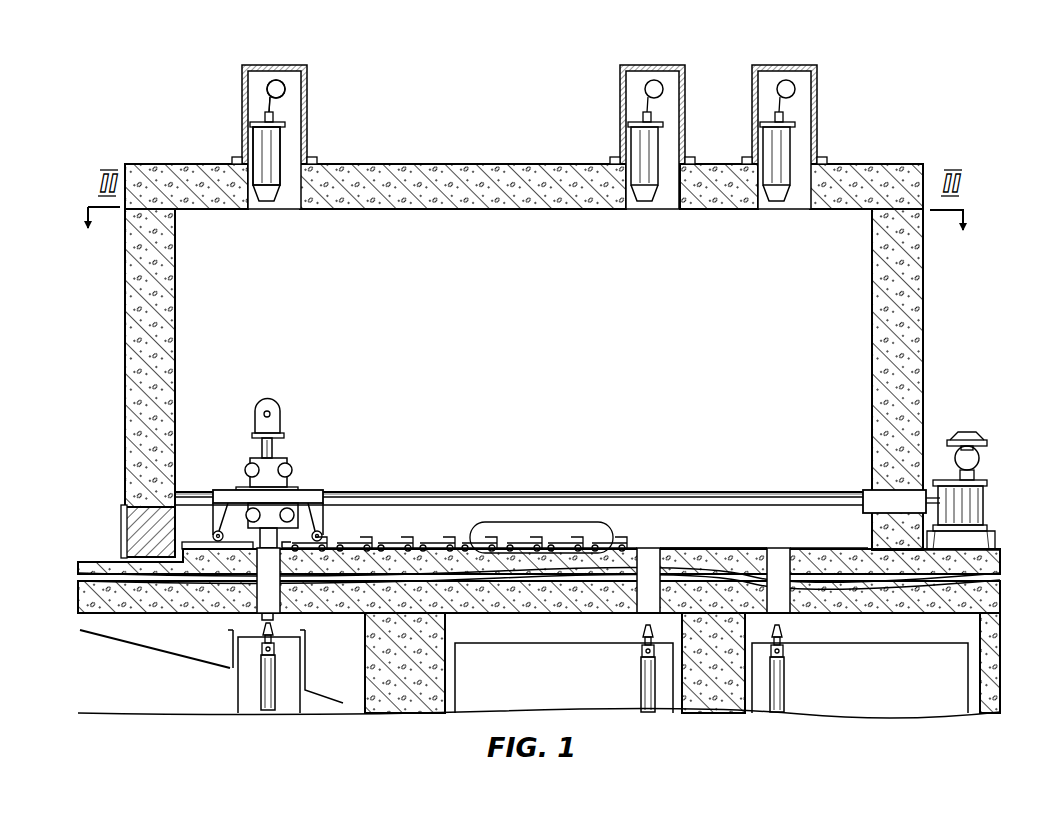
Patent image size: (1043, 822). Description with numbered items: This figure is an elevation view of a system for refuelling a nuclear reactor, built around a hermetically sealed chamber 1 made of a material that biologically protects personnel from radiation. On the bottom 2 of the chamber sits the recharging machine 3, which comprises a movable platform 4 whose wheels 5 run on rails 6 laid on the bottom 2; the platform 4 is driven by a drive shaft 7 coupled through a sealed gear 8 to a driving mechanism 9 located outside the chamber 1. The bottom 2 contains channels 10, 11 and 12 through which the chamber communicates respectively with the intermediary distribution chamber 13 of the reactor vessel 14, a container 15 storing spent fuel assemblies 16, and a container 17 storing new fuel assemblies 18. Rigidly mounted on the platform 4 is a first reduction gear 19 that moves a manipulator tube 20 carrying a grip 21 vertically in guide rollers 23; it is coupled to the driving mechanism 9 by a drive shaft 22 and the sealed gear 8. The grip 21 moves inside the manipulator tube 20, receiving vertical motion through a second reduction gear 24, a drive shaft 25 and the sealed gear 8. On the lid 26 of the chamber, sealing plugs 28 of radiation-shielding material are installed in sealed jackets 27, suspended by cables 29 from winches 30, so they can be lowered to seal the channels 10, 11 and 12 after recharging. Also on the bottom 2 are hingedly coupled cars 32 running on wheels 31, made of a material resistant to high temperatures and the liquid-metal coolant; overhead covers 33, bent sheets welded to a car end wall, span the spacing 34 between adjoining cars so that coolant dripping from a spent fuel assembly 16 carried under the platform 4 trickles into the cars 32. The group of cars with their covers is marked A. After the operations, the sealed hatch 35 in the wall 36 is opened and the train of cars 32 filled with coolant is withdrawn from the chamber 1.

The hermetically sealed chamber 1 is at (402, 161).
The bottom 2 is at (707, 548).
The recharging machine 3 is at (288, 463).
The movable platform 4 is at (326, 500).
The wheels 5 is at (326, 540).
The rails 6 is at (817, 547).
The drive shaft 7 is at (456, 491).
The sealed gear 8 is at (870, 493).
The driving mechanism 9 is at (990, 482).
The channel 10 is at (258, 623).
The channel 11 is at (638, 605).
The channel 12 is at (791, 605).
The intermediary distribution chamber 13 is at (286, 698).
The reactor vessel 14 is at (216, 670).
The container for storing spent fuel assemblies 15 is at (603, 700).
The spent fuel assemblies 16 is at (650, 705).
The container for storing new fuel assemblies 17 is at (832, 695).
The new fuel assemblies 18 is at (778, 705).
The first reduction gear 19 is at (249, 479).
The manipulator tube 20 is at (262, 450).
The grip 21 is at (284, 621).
The drive shaft 22 is at (491, 493).
The guide rollers 23 is at (290, 512).
The second reduction gear 24 is at (273, 416).
The drive shaft 25 is at (551, 500).
The lid 26 is at (497, 163).
The sealed jackets 27 is at (305, 98).
The sealing plugs 28 is at (277, 141).
The cables 29 is at (262, 106).
The winches 30 is at (267, 90).
The wheels 31 is at (606, 546).
The cars 32 is at (438, 545).
The overhead covers 33 is at (372, 536).
The spacing 34 is at (414, 536).
The sealed hatch 35 is at (140, 525).
The wall 36 is at (148, 368).
The carrier group A is at (577, 520).